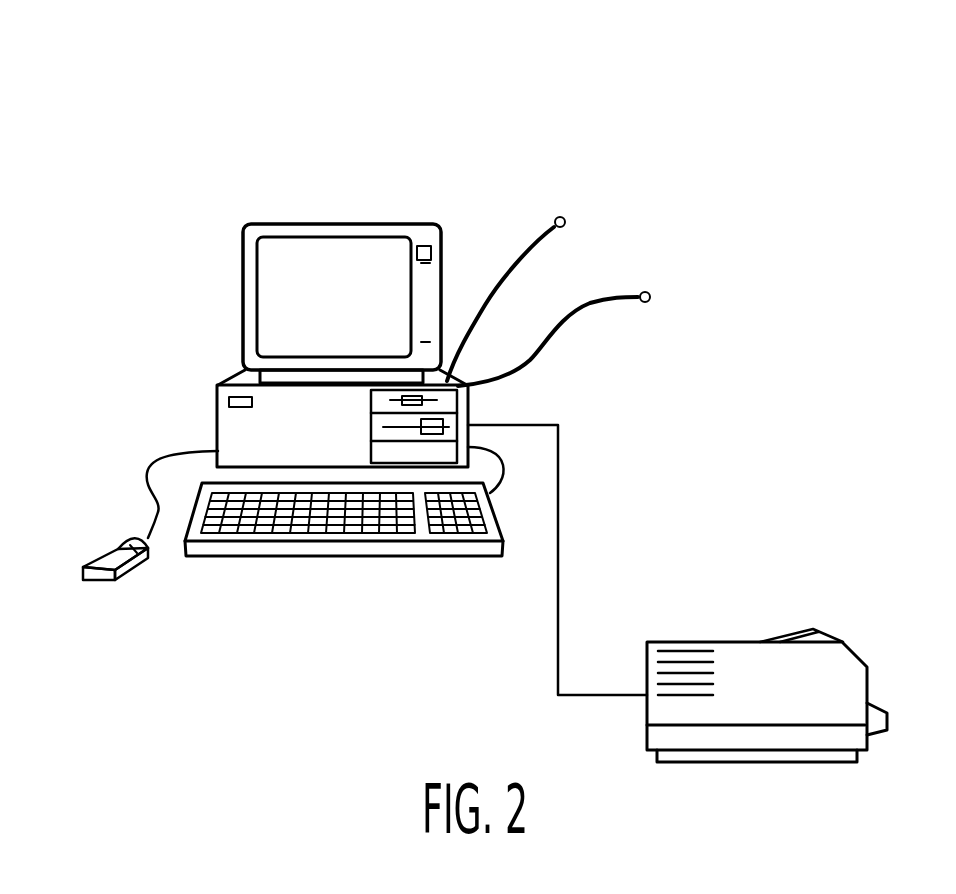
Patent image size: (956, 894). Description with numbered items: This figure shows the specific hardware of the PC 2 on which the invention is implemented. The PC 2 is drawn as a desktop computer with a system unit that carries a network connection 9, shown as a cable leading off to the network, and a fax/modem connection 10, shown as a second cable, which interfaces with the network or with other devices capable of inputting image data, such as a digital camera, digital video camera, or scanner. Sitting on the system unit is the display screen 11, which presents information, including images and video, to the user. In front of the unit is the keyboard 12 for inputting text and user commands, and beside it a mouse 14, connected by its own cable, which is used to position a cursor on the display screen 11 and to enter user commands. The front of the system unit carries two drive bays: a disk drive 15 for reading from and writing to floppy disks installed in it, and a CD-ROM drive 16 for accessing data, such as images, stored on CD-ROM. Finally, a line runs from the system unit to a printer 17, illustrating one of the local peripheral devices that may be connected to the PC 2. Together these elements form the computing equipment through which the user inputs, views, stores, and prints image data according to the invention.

The PC 2 is at (358, 124).
The network connection 9 is at (513, 265).
The fax/modem connection 10 is at (557, 335).
The display screen 11 is at (288, 247).
The keyboard 12 is at (330, 547).
The mouse 14 is at (102, 552).
The disk drive 15 is at (372, 400).
The CD-ROM drive 16 is at (372, 423).
The printer 17 is at (705, 642).